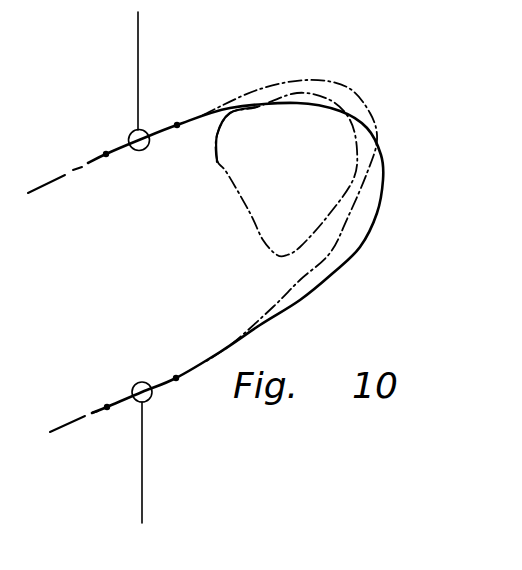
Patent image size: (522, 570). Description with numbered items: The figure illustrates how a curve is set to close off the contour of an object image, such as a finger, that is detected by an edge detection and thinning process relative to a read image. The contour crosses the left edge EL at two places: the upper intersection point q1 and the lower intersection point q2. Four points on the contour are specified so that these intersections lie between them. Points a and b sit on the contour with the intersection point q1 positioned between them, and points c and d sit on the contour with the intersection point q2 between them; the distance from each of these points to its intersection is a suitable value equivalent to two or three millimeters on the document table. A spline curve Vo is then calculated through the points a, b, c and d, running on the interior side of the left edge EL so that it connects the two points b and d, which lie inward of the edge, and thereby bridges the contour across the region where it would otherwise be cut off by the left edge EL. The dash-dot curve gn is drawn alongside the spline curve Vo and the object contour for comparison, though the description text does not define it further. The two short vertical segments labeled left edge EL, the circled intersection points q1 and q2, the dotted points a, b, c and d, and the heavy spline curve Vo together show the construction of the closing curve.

The left edge EL is at (137, 31).
The spline curve Vo is at (372, 217).
The profile curve of nth model gn is at (350, 90).
The upper intersection point q1 is at (131, 133).
The lower intersection point q2 is at (149, 401).
The contour point a is at (106, 158).
The contour point b is at (177, 128).
The contour point c is at (107, 403).
The contour point d is at (175, 374).